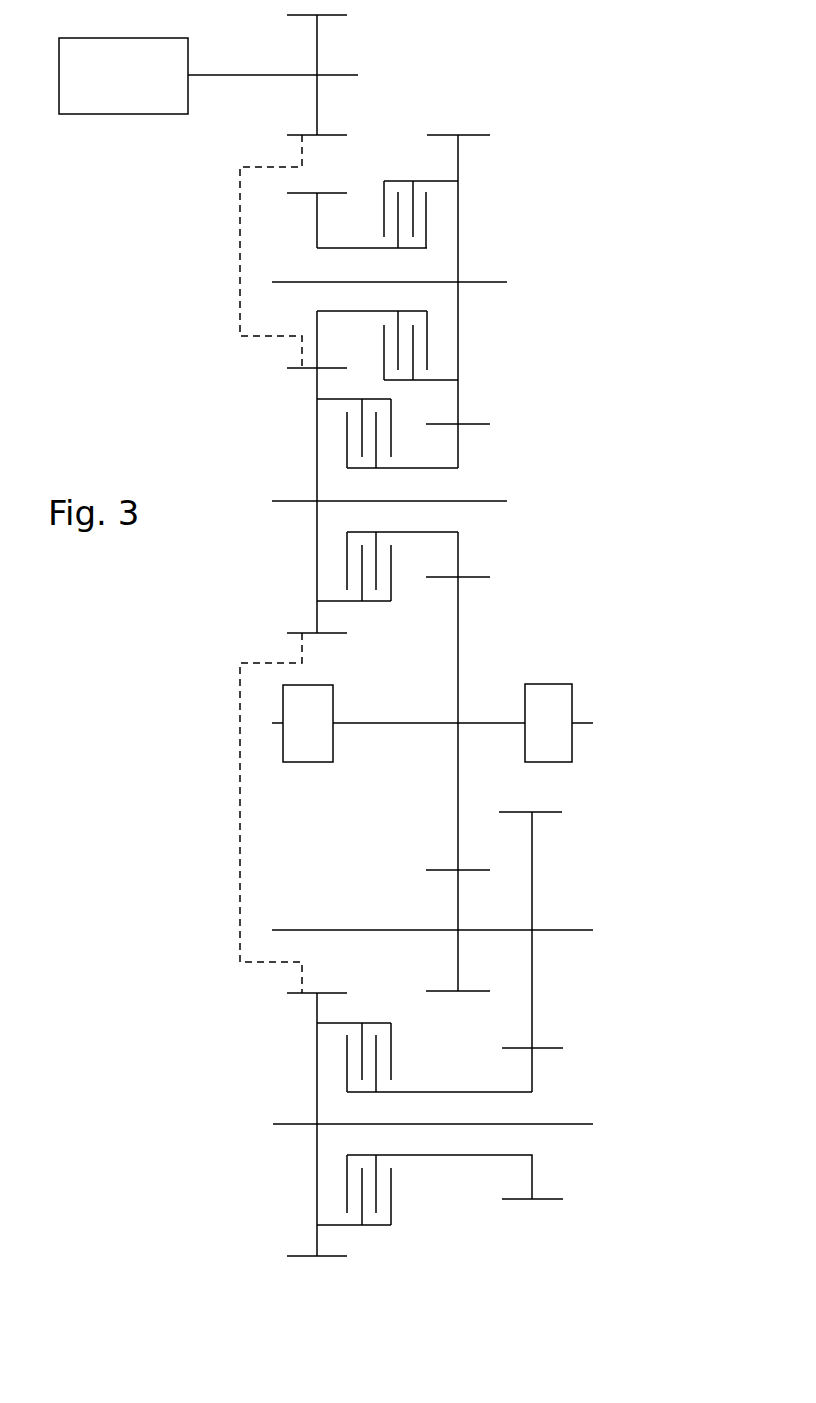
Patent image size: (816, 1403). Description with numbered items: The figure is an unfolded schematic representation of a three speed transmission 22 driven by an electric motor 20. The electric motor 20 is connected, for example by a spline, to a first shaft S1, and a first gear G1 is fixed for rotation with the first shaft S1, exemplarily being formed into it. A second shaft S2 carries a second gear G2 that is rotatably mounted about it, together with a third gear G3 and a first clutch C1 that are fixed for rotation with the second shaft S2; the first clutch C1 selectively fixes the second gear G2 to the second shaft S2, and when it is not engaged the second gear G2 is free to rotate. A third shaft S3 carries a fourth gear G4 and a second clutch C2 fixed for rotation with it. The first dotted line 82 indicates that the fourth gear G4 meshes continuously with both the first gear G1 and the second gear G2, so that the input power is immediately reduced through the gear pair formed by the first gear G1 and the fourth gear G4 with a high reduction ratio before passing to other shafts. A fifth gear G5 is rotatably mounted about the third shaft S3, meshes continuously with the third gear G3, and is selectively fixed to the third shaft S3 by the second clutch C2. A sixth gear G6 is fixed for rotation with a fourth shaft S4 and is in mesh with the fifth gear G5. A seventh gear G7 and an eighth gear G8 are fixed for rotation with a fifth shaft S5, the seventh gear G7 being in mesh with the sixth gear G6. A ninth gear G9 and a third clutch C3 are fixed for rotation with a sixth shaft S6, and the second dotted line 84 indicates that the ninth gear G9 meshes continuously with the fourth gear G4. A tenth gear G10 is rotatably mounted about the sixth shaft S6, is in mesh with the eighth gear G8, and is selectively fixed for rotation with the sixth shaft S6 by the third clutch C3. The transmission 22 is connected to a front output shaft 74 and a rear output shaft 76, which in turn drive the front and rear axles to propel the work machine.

The electric motor 20 is at (93, 114).
The three speed transmission 22 is at (646, 233).
The first shaft S1 is at (230, 76).
The second shaft S2 is at (487, 282).
The third shaft S3 is at (482, 500).
The fourth shaft S4 is at (580, 724).
The fifth shaft S5 is at (560, 930).
The sixth shaft S6 is at (290, 1124).
The first gear G1 is at (317, 48).
The second gear G2 is at (317, 226).
The third gear G3 is at (458, 160).
The fourth gear G4 is at (317, 385).
The fifth gear G5 is at (458, 553).
The sixth gear G6 is at (458, 604).
The seventh gear G7 is at (458, 893).
The eighth gear G8 is at (532, 838).
The ninth gear G9 is at (317, 1240).
The tenth gear G10 is at (532, 1071).
The first clutch C1 is at (397, 181).
The second clutch C2 is at (380, 602).
The third clutch C3 is at (391, 1212).
The front output shaft 74 is at (572, 695).
The rear output shaft 76 is at (308, 762).
The first dotted line 82 is at (240, 300).
The second dotted line 84 is at (240, 892).